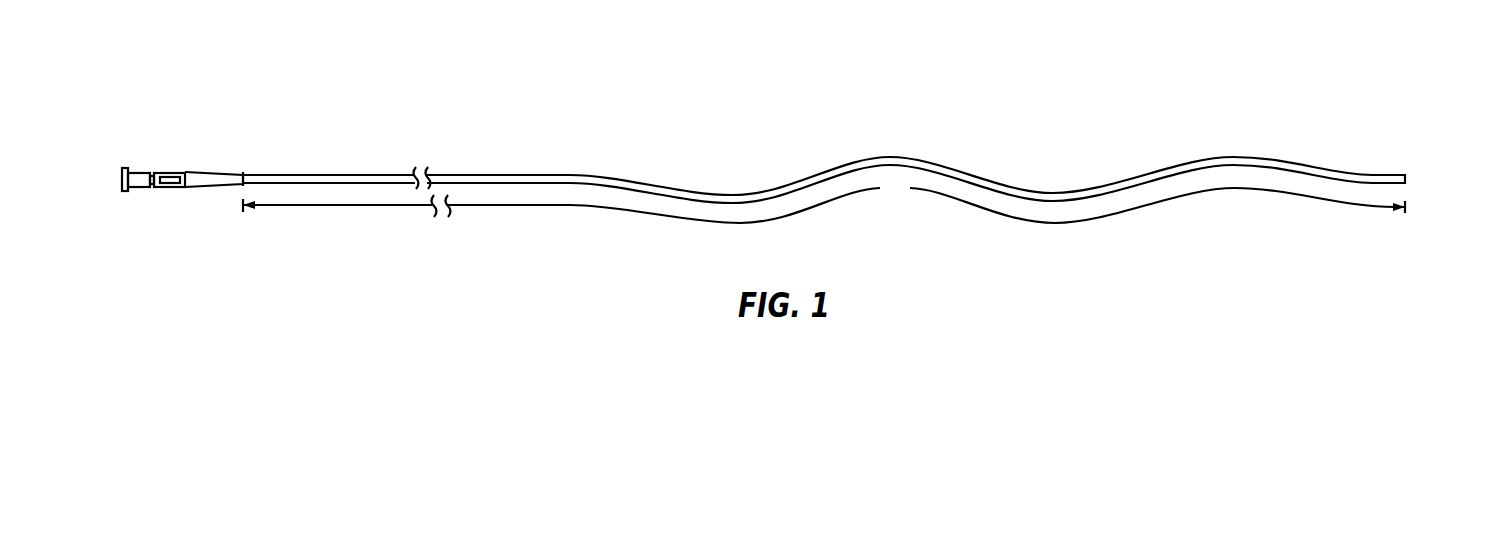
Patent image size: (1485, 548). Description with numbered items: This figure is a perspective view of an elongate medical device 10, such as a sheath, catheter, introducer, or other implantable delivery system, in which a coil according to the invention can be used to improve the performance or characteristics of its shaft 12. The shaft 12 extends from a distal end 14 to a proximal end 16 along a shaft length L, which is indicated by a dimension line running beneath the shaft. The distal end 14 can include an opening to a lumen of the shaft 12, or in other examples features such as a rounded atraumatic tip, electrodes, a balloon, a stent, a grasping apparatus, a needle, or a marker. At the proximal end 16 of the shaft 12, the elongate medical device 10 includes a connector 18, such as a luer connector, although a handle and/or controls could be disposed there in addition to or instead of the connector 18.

The elongate medical device 10 is at (361, 72).
The shaft 12 is at (638, 178).
The distal end 14 is at (1407, 179).
The proximal end 16 is at (243, 172).
The connector 18 is at (170, 172).
The shaft length L is at (824, 199).